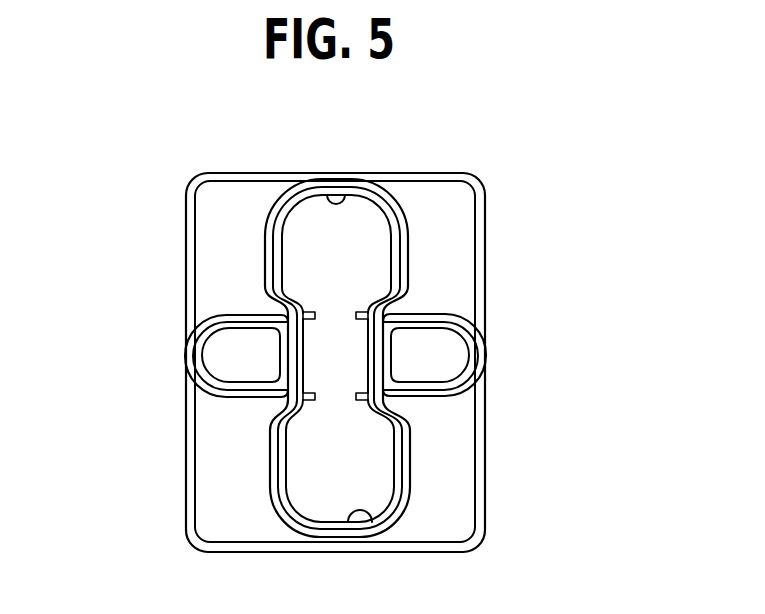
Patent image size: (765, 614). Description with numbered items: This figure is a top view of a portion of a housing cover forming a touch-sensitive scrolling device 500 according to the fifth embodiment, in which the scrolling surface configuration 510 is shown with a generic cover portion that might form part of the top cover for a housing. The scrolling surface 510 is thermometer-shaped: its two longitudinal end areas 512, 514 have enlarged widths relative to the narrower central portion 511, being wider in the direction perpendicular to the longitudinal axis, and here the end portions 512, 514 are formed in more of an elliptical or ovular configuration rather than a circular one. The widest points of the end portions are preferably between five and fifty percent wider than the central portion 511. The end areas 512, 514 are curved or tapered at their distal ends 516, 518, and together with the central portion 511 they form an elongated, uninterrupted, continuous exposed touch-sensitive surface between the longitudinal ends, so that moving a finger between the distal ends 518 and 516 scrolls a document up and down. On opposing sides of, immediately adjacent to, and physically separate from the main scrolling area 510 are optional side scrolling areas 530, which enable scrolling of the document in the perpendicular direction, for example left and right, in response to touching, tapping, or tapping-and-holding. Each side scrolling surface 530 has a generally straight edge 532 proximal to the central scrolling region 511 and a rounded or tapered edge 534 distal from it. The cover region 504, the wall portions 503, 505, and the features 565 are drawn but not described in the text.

The scrolling device 500 is at (428, 268).
The upper lobe wall 503 is at (278, 265).
The body plate 504 is at (460, 214).
The lower lobe wall 505 is at (272, 478).
The scrolling surface 510 is at (372, 291).
The central portion 511 is at (330, 357).
The longitudinal end area 512 is at (307, 235).
The longitudinal end area 514 is at (373, 473).
The distal end 516 is at (347, 193).
The distal end 518 is at (355, 530).
The side scrolling area 530 is at (212, 347).
The straight edge 532 is at (285, 345).
The rounded or tapered edge 534 is at (206, 372).
The tab 565 is at (313, 303).